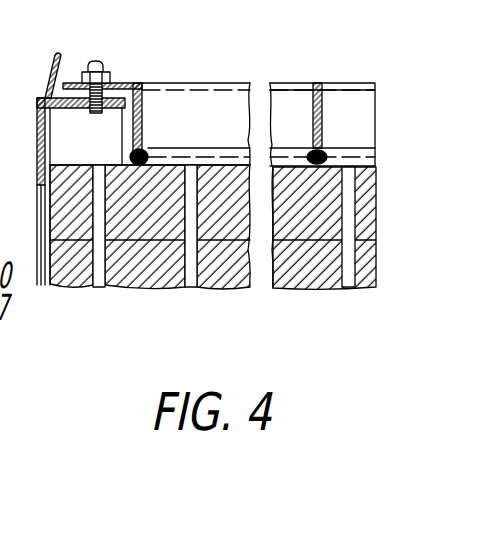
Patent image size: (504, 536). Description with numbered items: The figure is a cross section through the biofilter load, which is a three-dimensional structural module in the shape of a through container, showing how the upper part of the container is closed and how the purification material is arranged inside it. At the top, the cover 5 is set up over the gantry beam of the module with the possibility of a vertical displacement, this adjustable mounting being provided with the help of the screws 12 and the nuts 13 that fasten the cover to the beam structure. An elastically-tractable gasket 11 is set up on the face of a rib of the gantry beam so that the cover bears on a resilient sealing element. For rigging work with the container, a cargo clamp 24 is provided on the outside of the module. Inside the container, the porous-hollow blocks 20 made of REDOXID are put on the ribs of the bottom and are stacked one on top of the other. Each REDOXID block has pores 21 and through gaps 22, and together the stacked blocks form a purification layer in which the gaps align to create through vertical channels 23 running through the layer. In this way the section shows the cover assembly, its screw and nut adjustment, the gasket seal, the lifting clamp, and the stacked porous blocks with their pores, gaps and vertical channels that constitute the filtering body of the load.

The cover 5 is at (190, 105).
The elastically-tractable gasket 11 is at (318, 150).
The screw 12 is at (92, 62).
The nut 13 is at (112, 72).
The porous-hollow block 20 is at (173, 285).
The pore 21 is at (77, 228).
The through gap 22 is at (185, 227).
The through vertical channel 23 is at (349, 283).
The cargo clamp 24 is at (52, 63).